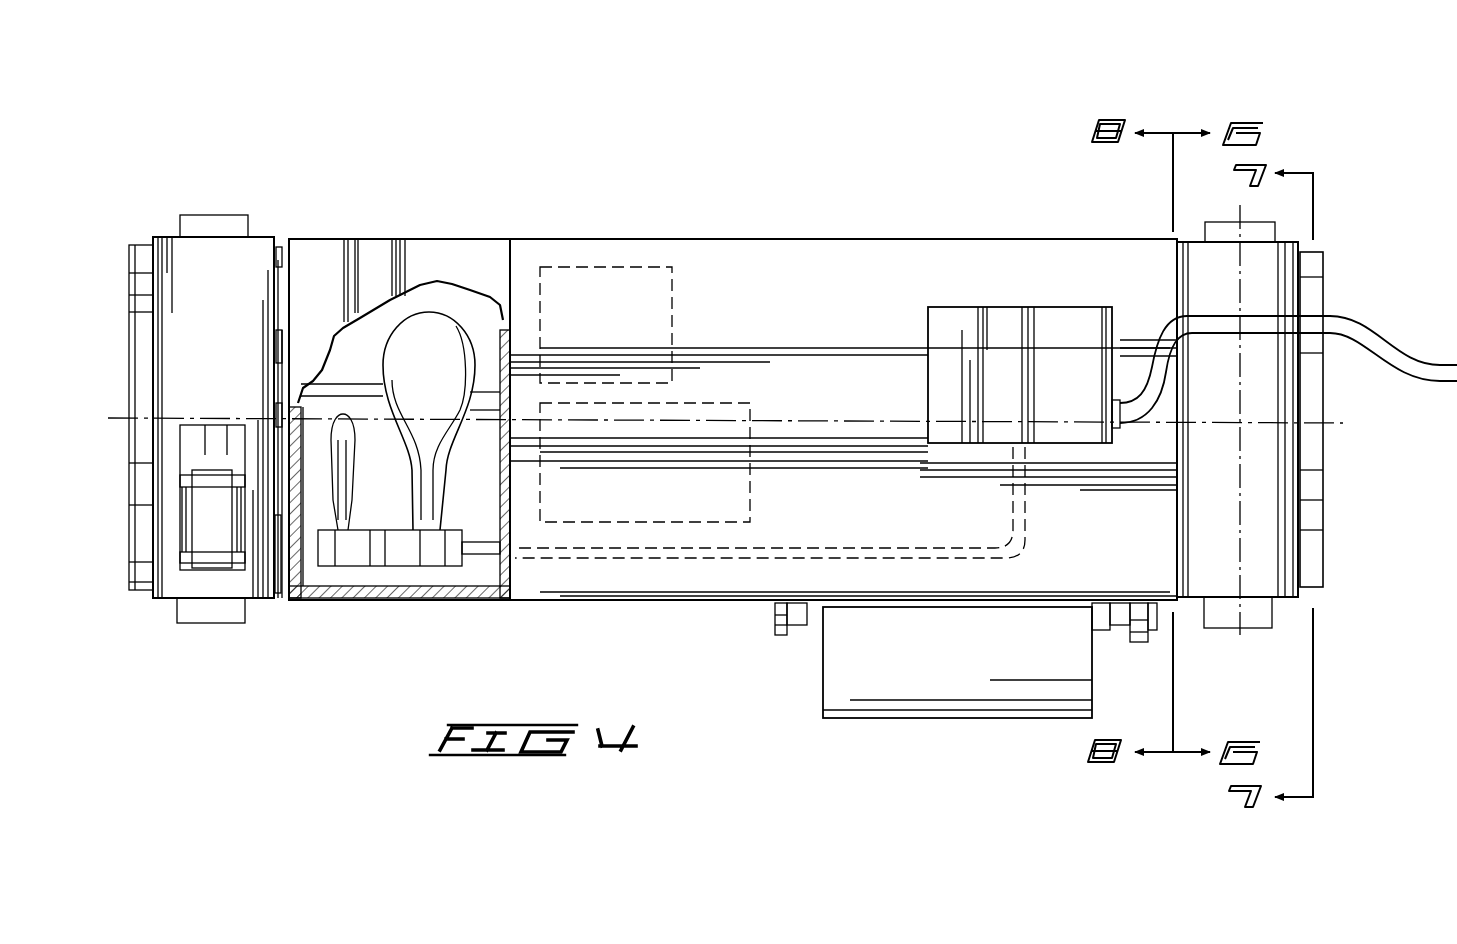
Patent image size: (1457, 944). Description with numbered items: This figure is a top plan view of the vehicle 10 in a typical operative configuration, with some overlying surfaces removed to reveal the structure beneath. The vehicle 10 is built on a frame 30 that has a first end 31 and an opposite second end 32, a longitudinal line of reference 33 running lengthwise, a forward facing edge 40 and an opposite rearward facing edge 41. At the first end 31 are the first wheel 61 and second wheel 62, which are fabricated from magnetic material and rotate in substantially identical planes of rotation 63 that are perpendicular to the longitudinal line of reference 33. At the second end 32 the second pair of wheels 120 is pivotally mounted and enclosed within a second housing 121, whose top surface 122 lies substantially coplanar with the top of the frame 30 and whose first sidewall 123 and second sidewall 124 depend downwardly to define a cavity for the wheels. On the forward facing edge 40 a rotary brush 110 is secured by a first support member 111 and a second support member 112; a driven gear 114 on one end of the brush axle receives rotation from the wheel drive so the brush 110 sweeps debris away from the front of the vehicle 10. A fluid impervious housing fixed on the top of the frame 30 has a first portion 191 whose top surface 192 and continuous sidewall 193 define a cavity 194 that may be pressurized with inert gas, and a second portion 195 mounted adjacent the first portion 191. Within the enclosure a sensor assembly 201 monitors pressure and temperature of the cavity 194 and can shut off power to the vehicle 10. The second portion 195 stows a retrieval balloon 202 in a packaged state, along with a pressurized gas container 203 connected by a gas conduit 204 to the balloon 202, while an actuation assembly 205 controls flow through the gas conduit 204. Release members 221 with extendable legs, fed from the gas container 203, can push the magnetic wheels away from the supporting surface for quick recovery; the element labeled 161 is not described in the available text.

The vehicle 10 is at (832, 162).
The frame 30 is at (545, 222).
The first end 31 is at (1180, 312).
The second end 32 is at (300, 333).
The longitudinal line of reference 33 is at (1333, 425).
The forward facing edge 40 is at (645, 603).
The rearward facing edge 41 is at (720, 240).
The first wheel 61 is at (1215, 612).
The second wheel 62 is at (1220, 231).
The planes of rotation 63 is at (1240, 635).
The rotary brush 110 is at (933, 758).
The first support member 111 is at (1115, 635).
The second support member 112 is at (775, 610).
The driven gear 114 is at (1140, 645).
The second pair of wheels 120 is at (231, 382).
The second housing 121 is at (268, 222).
The top surface 122 is at (230, 367).
The first sidewall 123 is at (282, 232).
The second sidewall 124 is at (153, 285).
The connector 161 is at (138, 540).
The first portion 191 is at (876, 296).
The top surface 192 is at (787, 305).
The continuous sidewall 193 is at (760, 240).
The cavity 194 is at (980, 305).
The second portion 195 is at (430, 270).
The sensor assembly 201 is at (590, 300).
The retrieval balloon 202 is at (440, 370).
The pressurized gas container 203 is at (340, 453).
The gas conduit 204 is at (495, 543).
The actuation assembly 205 is at (369, 550).
The vehicle release member 221 is at (277, 258).